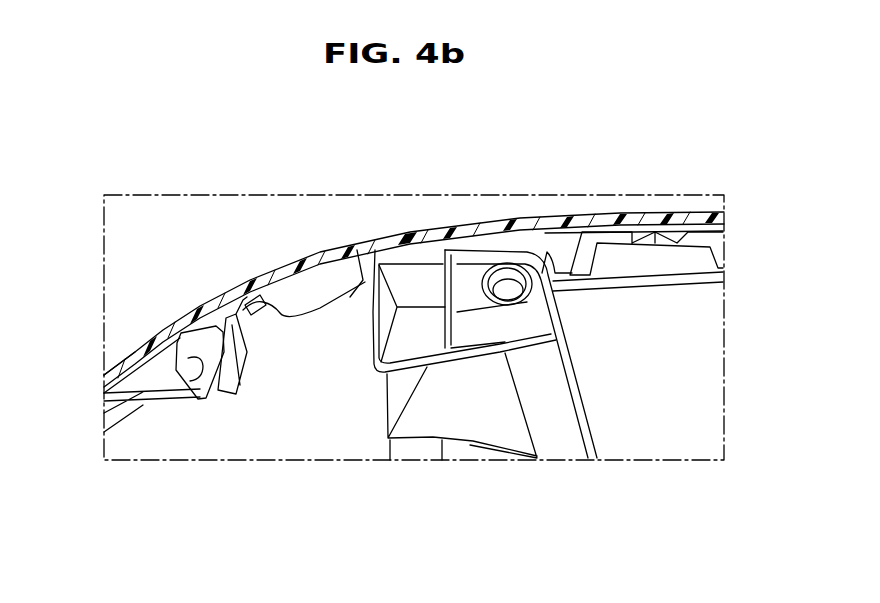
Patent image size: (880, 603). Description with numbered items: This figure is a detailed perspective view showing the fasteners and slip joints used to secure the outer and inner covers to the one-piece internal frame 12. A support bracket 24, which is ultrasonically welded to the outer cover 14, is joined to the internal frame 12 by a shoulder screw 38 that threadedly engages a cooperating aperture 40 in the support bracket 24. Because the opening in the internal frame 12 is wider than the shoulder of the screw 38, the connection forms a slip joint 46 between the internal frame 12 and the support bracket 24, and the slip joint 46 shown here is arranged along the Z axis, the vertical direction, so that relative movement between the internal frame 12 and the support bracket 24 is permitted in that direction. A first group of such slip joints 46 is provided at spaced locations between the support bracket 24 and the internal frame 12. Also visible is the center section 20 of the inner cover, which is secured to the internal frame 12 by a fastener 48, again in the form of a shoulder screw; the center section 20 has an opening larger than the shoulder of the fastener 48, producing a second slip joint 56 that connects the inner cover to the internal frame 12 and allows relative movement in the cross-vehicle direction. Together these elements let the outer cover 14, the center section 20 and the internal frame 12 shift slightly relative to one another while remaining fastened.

The internal frame 12 is at (248, 432).
The outer cover 14 is at (418, 226).
The center section 20 is at (665, 341).
The support bracket 24 is at (207, 348).
The shoulder screw 38 is at (243, 367).
The aperture 40 is at (200, 358).
The slip joint 46 is at (99, 372).
The fastener 48 is at (512, 297).
The slip joint 56 is at (518, 249).